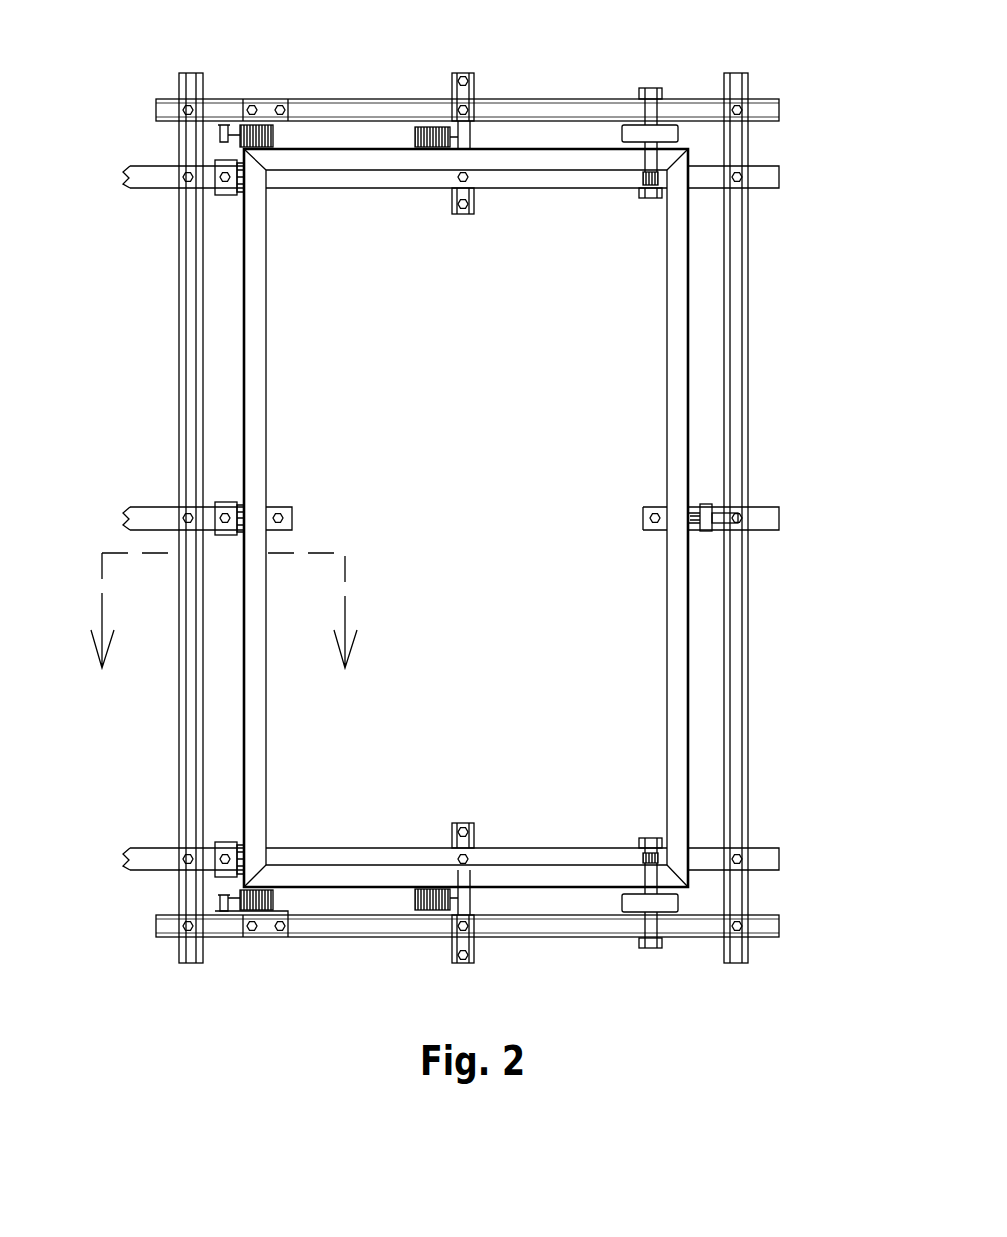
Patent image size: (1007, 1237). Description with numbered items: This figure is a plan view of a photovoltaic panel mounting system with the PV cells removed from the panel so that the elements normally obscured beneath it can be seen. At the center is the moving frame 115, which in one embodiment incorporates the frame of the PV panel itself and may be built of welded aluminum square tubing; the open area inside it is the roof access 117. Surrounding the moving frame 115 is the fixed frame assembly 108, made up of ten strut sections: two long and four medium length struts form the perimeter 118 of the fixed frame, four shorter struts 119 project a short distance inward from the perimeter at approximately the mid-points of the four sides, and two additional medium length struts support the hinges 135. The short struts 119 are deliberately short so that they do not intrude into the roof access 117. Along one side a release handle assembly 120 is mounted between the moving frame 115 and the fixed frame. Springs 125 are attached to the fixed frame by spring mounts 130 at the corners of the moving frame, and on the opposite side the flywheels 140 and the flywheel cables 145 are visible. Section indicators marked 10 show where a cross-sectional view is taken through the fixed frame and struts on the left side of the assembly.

The section line 10- 10 is at (224, 630).
The fixed frame assembly 108 is at (738, 137).
The moving frame 115 is at (676, 373).
The roof access 117 is at (478, 484).
The long strut 118 is at (143, 980).
The short strut 119 is at (763, 522).
The release handle assembly 120 is at (705, 507).
The spring 125 is at (428, 120).
The spring mount 130 is at (268, 120).
The hinge 135 is at (215, 168).
The flywheel 140 is at (663, 132).
The flywheel cable 145 is at (645, 180).